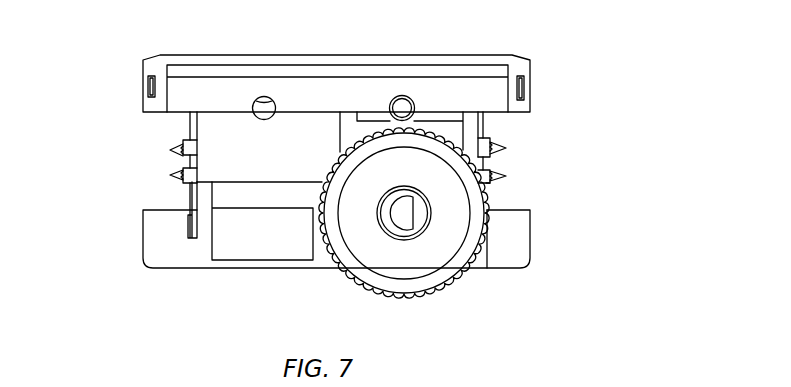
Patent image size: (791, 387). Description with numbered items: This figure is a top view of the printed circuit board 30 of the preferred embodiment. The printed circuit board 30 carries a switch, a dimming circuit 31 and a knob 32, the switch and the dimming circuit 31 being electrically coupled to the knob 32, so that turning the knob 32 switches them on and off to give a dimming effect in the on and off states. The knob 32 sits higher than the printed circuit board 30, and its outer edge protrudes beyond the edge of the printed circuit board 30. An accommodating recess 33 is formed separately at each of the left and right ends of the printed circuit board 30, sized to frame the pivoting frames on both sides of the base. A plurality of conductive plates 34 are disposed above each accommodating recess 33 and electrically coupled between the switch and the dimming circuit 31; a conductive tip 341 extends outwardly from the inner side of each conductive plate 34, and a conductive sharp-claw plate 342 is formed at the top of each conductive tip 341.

The printed circuit board 30 is at (607, 165).
The dimming circuit 31 is at (305, 120).
The knob 32 is at (427, 252).
The accommodating recess 33 is at (340, 177).
The conductive plate 34 is at (189, 217).
The conductive tip 341 is at (184, 172).
The conductive sharp-claw plate 342 is at (176, 174).